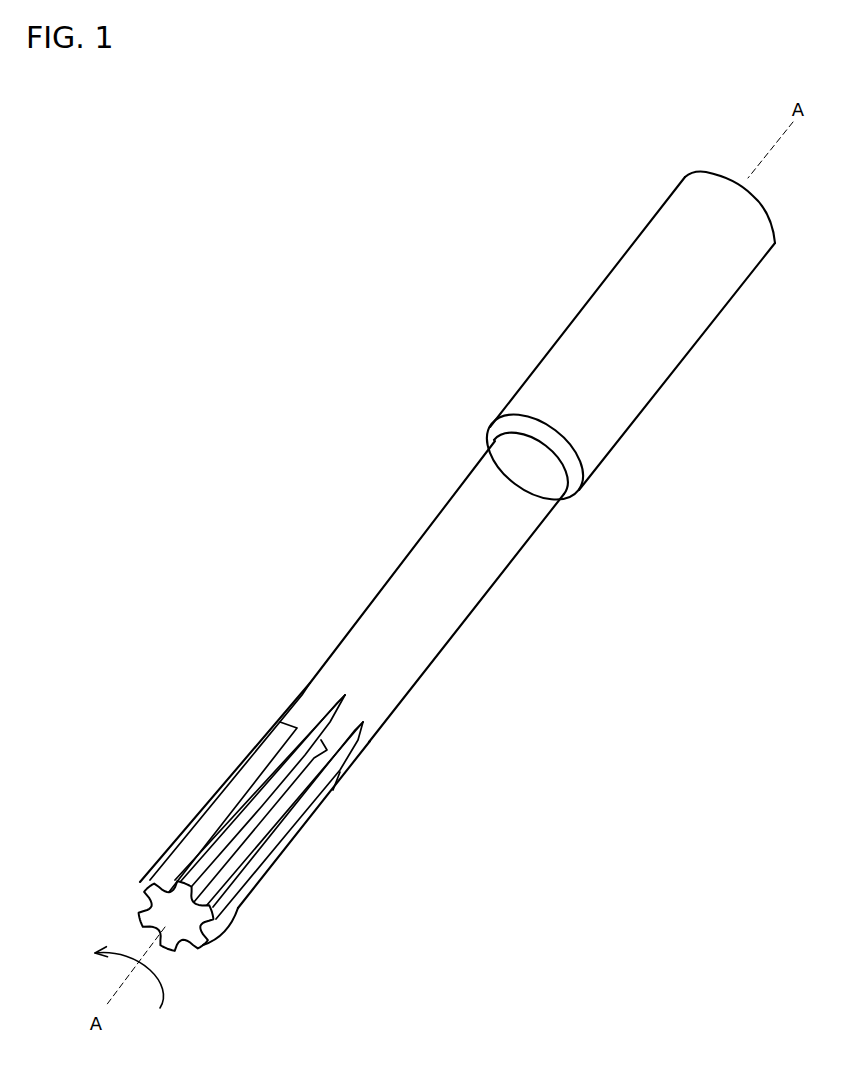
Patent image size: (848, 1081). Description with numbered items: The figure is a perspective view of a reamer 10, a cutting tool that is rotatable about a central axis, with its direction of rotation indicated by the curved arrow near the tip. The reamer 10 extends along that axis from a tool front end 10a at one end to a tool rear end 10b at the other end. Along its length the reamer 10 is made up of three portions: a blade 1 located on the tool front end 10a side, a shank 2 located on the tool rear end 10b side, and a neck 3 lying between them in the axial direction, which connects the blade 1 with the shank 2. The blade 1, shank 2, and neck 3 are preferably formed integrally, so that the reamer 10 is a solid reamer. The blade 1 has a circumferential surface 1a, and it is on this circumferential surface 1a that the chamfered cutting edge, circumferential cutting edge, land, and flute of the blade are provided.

The reamer 10 is at (330, 525).
The tool front end 10a is at (140, 897).
The tool rear end 10b is at (711, 172).
The blade 1 is at (237, 817).
The circumferential surface 1a is at (237, 815).
The shank 2 is at (628, 296).
The neck 3 is at (593, 507).